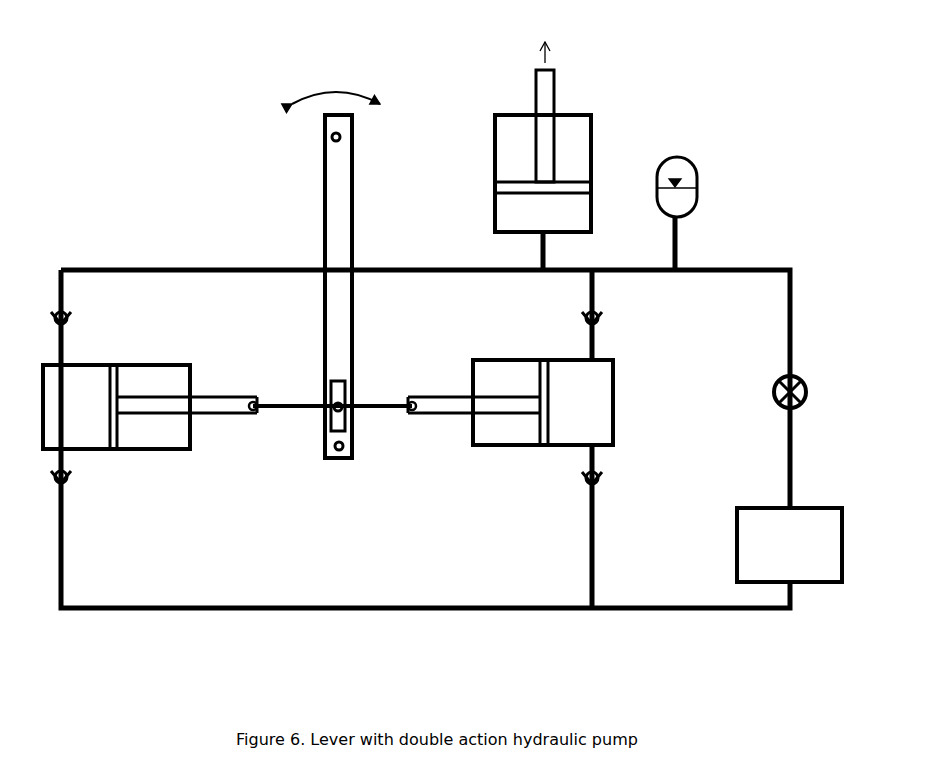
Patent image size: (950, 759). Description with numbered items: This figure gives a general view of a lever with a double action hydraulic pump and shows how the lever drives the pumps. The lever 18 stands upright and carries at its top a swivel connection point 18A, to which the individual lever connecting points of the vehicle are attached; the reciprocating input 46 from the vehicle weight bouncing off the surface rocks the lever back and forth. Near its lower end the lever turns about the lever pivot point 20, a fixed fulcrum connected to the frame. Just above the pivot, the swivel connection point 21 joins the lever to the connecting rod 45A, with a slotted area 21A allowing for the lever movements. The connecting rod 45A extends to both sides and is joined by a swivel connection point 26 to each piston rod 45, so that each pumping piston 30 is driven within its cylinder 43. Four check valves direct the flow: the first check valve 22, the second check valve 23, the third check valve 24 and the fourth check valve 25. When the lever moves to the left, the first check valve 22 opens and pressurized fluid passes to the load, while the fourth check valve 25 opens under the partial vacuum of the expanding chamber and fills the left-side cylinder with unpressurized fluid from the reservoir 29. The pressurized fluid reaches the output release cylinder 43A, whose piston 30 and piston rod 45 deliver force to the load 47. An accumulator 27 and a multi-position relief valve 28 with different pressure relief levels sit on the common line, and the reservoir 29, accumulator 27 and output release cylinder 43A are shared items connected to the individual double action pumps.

The lever 18 is at (323, 235).
The swivel connection point for lever 18A is at (330, 137).
The reciprocating input 46 is at (338, 92).
The to load 47 is at (544, 38).
The piston rod 45 is at (226, 395).
The connecting rod 45A is at (288, 399).
The cylinder 43 is at (140, 452).
The output release cylinder 43A is at (594, 143).
The pumping piston 30 is at (108, 429).
The swivel connection point at piston rod 26 is at (253, 414).
The swivel connection point at lever for connecting rod 21 is at (351, 398).
The slotted area 21A is at (334, 427).
The lever pivot point 20 is at (338, 456).
The check valve 1 22 is at (609, 319).
The check valve 2 23 is at (610, 479).
The check valve 3 24 is at (45, 319).
The check valve 4 25 is at (45, 477).
The accumulator 27 is at (691, 187).
The multi-position relief valve 28 is at (805, 392).
The reservoir 29 is at (804, 545).